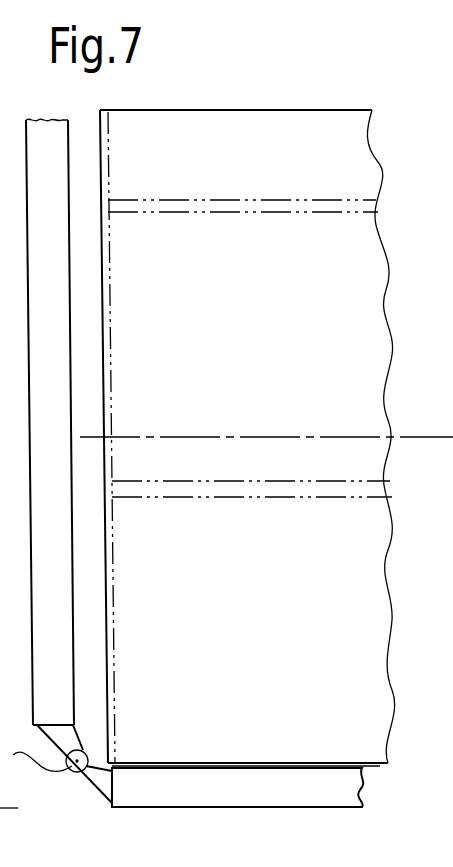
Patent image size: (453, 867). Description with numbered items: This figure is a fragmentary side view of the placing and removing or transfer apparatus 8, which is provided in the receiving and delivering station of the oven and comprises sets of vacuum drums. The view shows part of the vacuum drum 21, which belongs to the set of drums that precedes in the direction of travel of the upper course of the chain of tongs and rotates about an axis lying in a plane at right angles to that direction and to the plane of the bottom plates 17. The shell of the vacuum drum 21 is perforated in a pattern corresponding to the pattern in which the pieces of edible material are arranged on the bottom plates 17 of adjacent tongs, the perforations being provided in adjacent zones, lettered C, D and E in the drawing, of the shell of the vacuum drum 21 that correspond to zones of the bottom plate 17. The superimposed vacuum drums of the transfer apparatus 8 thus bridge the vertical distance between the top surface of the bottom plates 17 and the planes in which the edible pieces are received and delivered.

The vacuum drum 21 is at (160, 111).
The transfer apparatus 8 is at (44, 455).
The bottom plate 17 is at (193, 795).